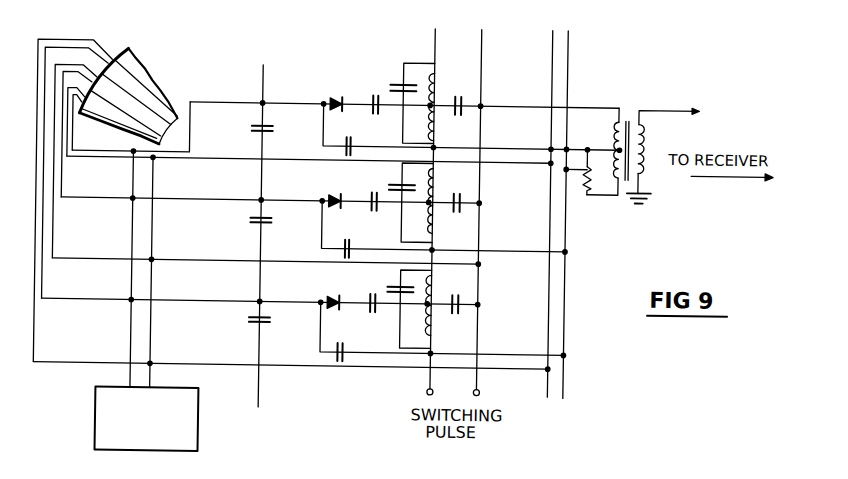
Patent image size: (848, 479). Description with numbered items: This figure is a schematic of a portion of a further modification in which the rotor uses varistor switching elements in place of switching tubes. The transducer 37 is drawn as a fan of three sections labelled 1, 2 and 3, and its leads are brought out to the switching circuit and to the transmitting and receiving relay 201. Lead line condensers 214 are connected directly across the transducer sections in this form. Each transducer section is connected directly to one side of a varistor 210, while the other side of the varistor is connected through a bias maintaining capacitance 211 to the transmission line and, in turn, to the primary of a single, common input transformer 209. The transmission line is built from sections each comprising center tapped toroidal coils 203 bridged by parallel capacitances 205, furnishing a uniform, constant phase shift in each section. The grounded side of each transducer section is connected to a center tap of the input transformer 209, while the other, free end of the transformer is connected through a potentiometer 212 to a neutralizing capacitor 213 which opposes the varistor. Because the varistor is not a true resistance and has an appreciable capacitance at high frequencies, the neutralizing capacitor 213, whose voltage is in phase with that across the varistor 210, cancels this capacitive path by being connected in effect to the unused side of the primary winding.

The transducer 37 is at (180, 59).
The contact segment 1 is at (95, 103).
The contact segment 2 is at (102, 86).
The contact segment 3 is at (117, 71).
The transmitting and receiving relay 201 is at (94, 427).
The center tapped toroidal coils 203 is at (438, 120).
The parallel capacitances 205 is at (457, 95).
The input transformer 209 is at (633, 112).
The varistor 210 is at (327, 96).
The bias maintaining capacitance 211 is at (373, 96).
The potentiometer 212 is at (576, 170).
The neutralizing capacitor 213 is at (354, 146).
The lead line condensers 214 is at (250, 131).